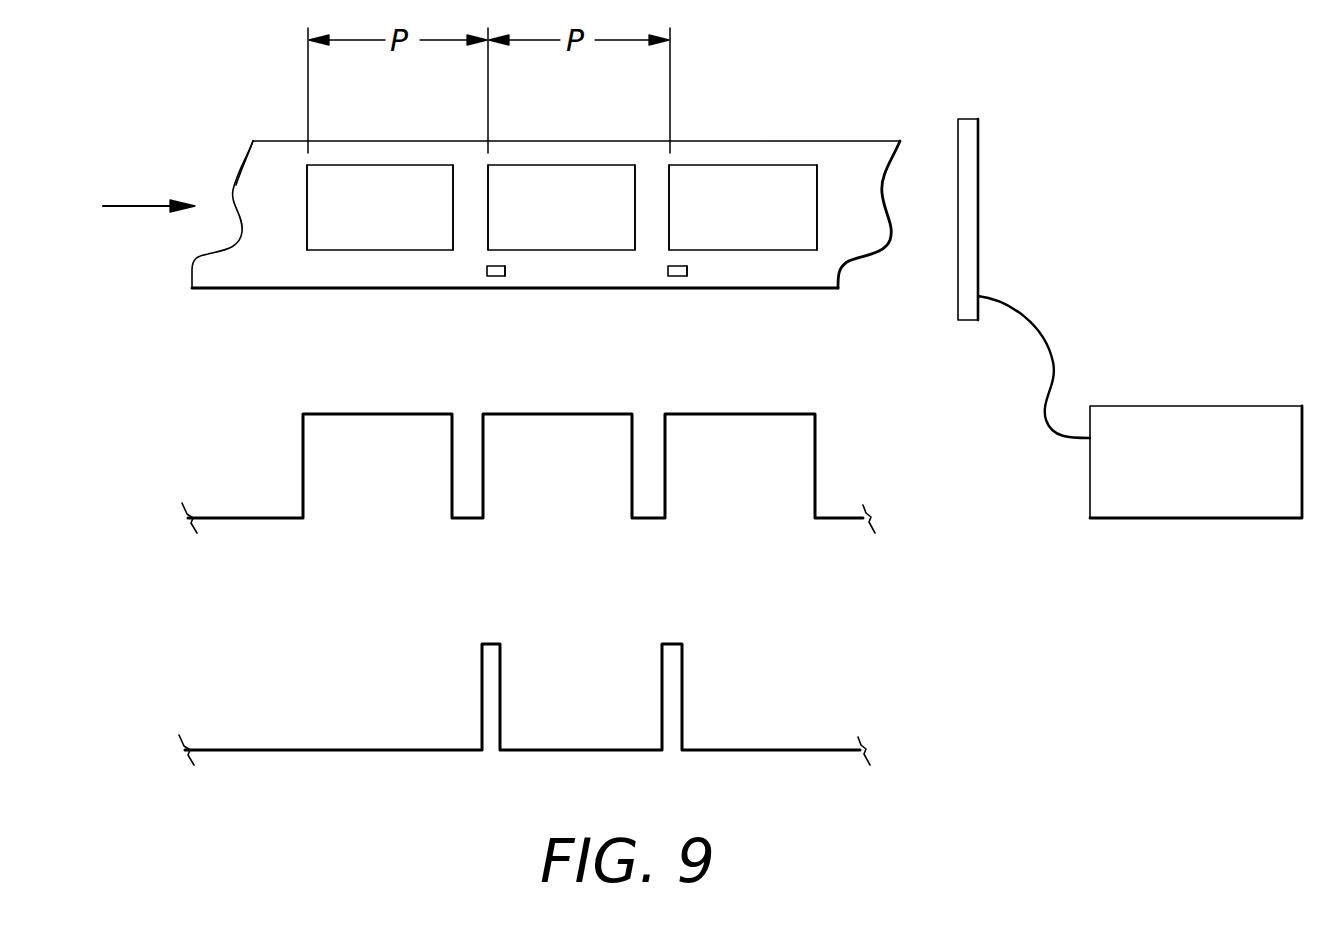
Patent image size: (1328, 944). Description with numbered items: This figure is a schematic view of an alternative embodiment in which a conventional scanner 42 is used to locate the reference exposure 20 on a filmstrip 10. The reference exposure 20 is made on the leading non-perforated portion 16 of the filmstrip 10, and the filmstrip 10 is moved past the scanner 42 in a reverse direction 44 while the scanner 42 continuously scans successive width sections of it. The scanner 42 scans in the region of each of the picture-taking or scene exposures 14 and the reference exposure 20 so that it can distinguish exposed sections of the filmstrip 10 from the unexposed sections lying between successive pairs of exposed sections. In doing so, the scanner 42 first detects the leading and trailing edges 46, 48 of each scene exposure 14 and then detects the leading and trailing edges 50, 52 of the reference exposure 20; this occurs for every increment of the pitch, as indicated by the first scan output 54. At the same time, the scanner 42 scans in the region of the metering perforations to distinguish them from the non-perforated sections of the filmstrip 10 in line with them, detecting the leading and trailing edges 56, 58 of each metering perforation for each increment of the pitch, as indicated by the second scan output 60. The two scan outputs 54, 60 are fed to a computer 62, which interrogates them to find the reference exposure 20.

The filmstrip 10 is at (267, 130).
The leading non-perforated portion 16 is at (262, 158).
The reverse direction 44 is at (143, 205).
The reference exposure 20 is at (378, 225).
The trailing edge of reference exposure 52 is at (307, 213).
The leading edge of reference exposure 50 is at (453, 185).
The scene exposure 14 is at (543, 240).
The trailing edge of scene exposure 48 is at (488, 213).
The leading edge of scene exposure 46 is at (635, 190).
The trailing edge of metering perforation 58 is at (487, 271).
The leading edge of metering perforation 56 is at (505, 270).
The scan output 54 is at (840, 518).
The scan output 60 is at (832, 750).
The scanner 42 is at (975, 117).
The computer 62 is at (1174, 406).